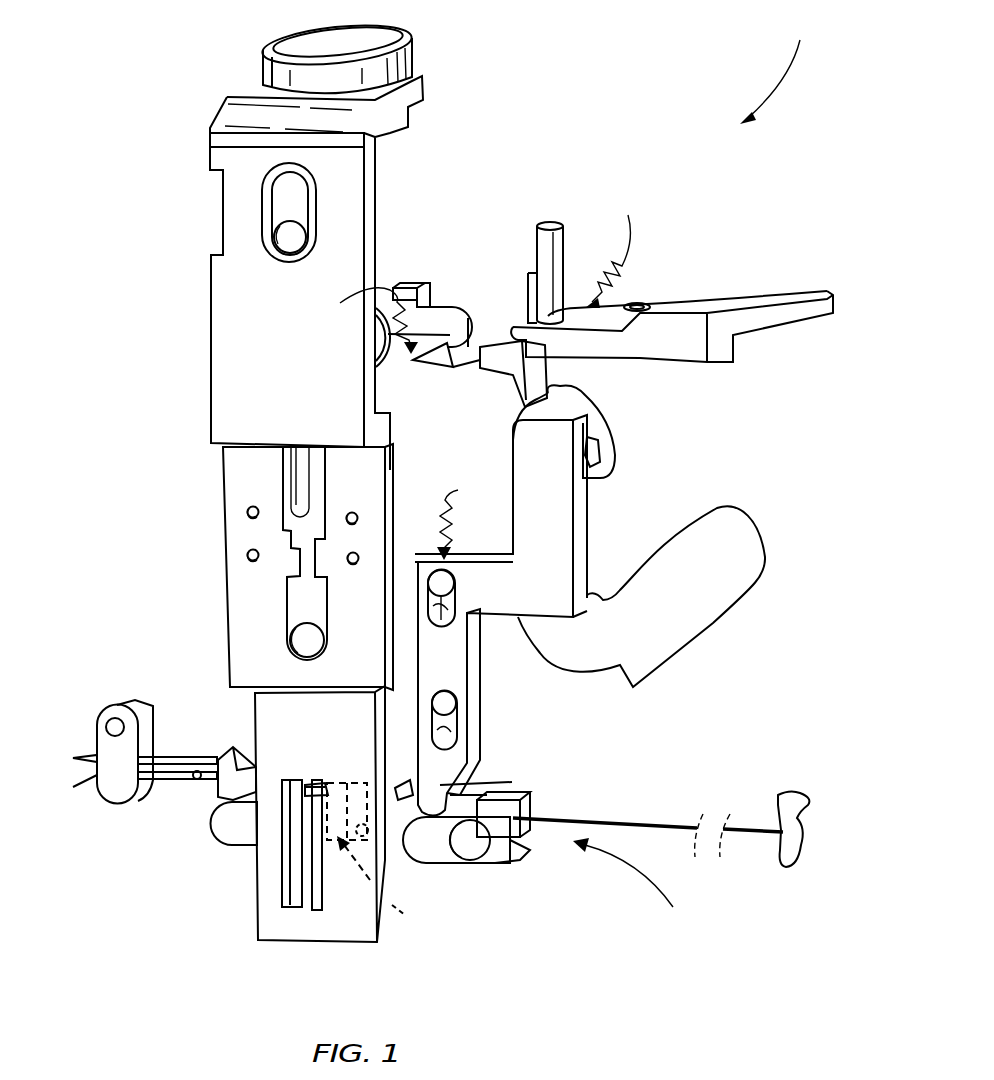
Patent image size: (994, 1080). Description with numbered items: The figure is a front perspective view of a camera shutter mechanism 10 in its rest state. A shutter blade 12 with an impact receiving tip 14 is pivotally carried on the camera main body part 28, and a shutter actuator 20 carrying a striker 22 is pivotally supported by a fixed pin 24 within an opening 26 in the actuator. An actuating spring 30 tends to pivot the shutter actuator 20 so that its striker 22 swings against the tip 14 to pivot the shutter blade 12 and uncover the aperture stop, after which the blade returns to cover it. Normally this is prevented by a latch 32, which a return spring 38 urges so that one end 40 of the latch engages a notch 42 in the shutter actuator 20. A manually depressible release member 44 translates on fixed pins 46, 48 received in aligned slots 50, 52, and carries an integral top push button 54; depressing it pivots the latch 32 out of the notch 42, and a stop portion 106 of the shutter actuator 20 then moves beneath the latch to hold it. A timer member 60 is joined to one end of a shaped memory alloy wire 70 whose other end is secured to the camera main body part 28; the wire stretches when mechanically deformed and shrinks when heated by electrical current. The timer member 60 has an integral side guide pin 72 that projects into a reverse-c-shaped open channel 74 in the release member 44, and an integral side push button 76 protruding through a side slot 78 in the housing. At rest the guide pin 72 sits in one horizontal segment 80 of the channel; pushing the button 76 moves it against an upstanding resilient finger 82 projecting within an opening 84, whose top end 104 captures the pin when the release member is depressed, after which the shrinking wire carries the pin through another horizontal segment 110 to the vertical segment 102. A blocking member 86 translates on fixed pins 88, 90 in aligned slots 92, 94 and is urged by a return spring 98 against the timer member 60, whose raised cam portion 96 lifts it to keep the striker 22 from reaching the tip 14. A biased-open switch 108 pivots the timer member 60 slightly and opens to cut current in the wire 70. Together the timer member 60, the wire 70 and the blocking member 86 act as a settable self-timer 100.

The shutter mechanism 10 is at (785, 68).
The shutter blade 12 is at (722, 628).
The impact receiving tip 14 is at (563, 385).
The shutter actuator 20 is at (630, 370).
The striker 22 is at (523, 397).
The fixed pin 24 is at (637, 305).
The opening 26 is at (647, 305).
The camera main body part 28 is at (800, 838).
The actuating spring 30 is at (585, 257).
The latch 32 is at (452, 296).
The return spring 38 is at (379, 325).
The end of the latch 40 is at (457, 373).
The notch 42 is at (473, 362).
The release member 44 is at (203, 350).
The fixed pin 46 is at (290, 238).
The fixed pin 48 is at (302, 643).
The slot 50 is at (282, 196).
The slot 52 is at (293, 606).
The top push button 54 is at (283, 40).
The timer member 60 is at (195, 822).
The SMA wire 70 is at (650, 828).
The guide pin 72 is at (390, 872).
The reverse-c-shaped channel 74 is at (418, 920).
The side push button 76 is at (473, 857).
The side slot 78 is at (430, 858).
The horizontal segment 80 is at (300, 858).
The resilient finger 82 is at (300, 877).
The opening 84 is at (293, 893).
The blocking member 86 is at (490, 668).
The fixed pin 88 is at (445, 583).
The fixed pin 90 is at (450, 702).
The slot 92 is at (440, 625).
The slot 94 is at (440, 727).
The cam portion 96 is at (505, 796).
The return spring 98 is at (460, 512).
The self-timer 100 is at (645, 884).
The vertical segment 102 is at (352, 780).
The top end of the resilient finger 104 is at (320, 797).
The stop portion 106 is at (465, 318).
The biased-open switch 108 is at (85, 752).
The horizontal segment 110 is at (317, 777).